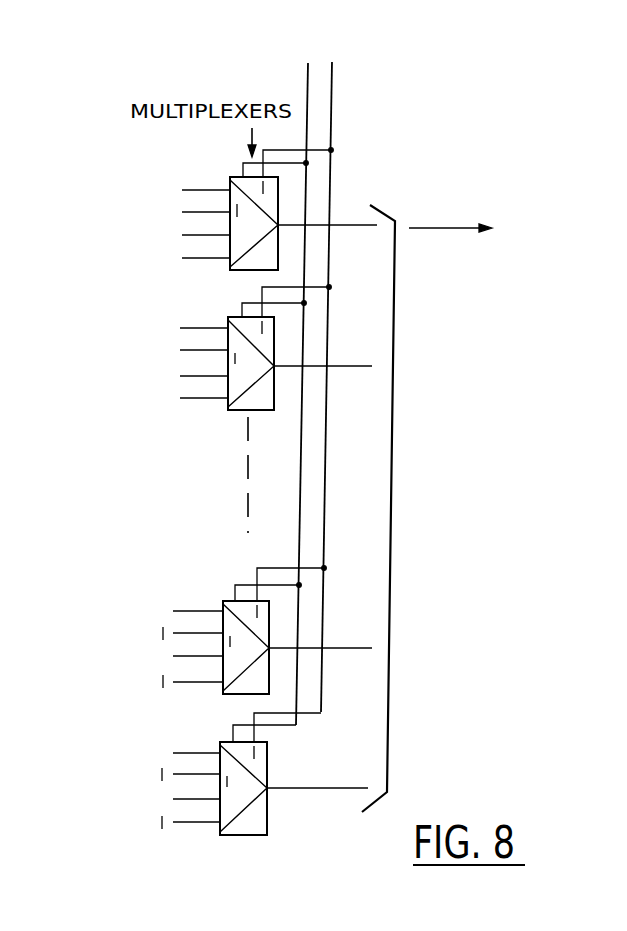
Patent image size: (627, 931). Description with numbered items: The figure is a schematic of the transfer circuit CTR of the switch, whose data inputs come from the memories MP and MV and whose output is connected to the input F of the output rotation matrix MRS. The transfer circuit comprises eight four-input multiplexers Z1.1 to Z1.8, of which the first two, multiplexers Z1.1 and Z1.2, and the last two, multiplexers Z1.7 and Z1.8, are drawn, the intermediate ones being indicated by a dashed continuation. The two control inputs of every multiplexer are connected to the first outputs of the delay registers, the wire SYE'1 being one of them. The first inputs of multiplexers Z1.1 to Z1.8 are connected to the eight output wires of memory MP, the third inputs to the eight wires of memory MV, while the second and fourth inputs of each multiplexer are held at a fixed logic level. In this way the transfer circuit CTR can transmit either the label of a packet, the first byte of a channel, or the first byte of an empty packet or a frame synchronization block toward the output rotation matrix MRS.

The four input multiplexer Z1.1 is at (235, 271).
The four input multiplexer Z1.2 is at (232, 411).
The four input multiplexer Z1.7 is at (217, 696).
The four input multiplexer Z1.8 is at (227, 841).
The first output of delay register RGV2 SYE'1 is at (353, 375).
The transfer circuit CTR is at (487, 508).
The output rotation matrix MRS is at (508, 214).